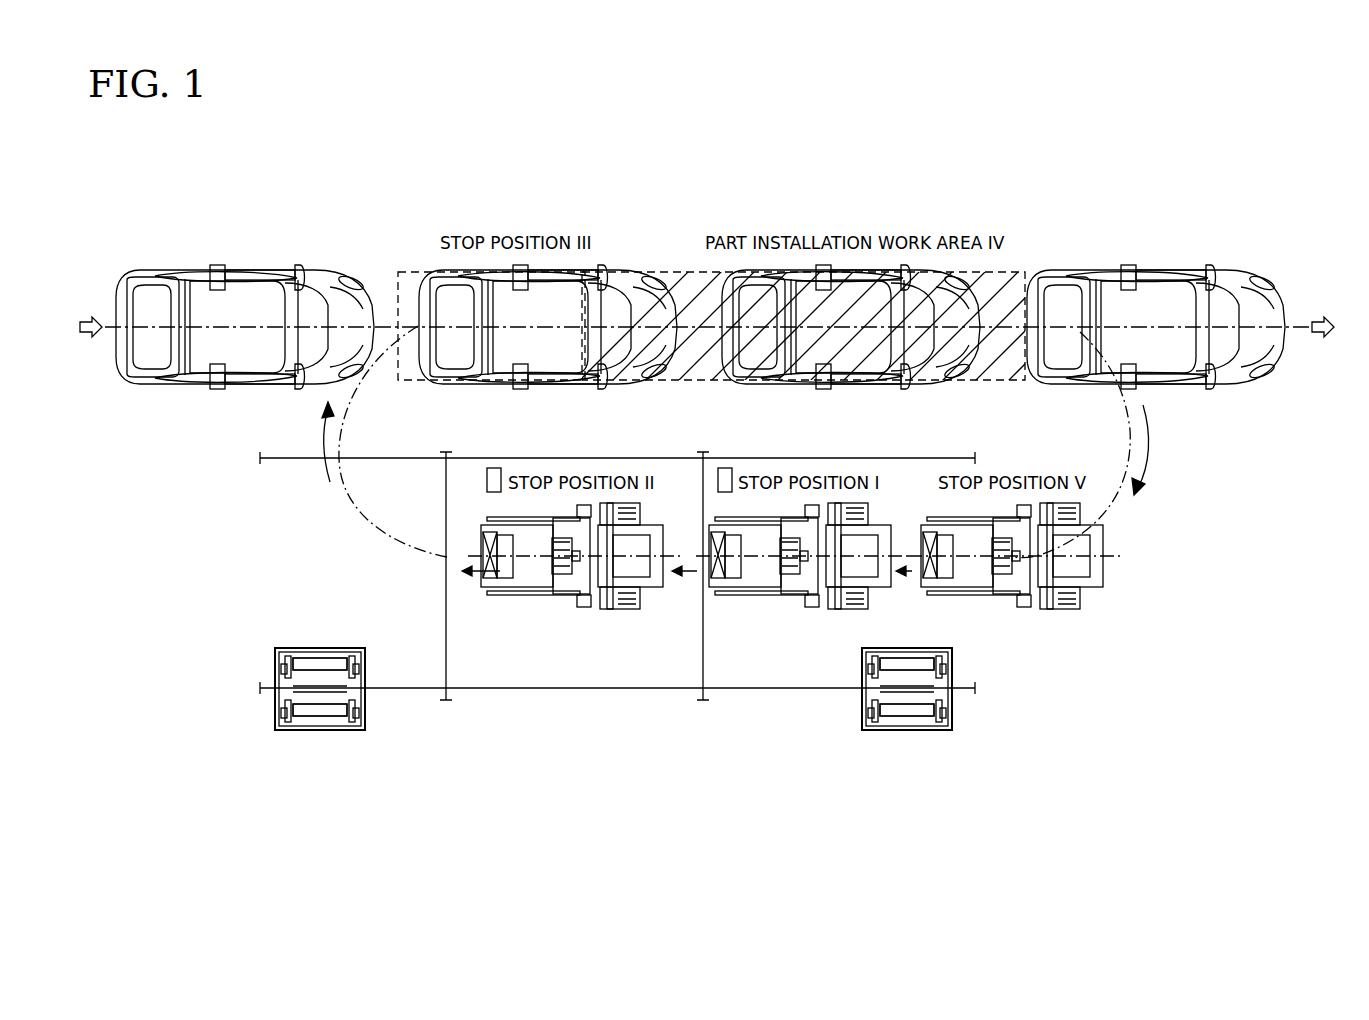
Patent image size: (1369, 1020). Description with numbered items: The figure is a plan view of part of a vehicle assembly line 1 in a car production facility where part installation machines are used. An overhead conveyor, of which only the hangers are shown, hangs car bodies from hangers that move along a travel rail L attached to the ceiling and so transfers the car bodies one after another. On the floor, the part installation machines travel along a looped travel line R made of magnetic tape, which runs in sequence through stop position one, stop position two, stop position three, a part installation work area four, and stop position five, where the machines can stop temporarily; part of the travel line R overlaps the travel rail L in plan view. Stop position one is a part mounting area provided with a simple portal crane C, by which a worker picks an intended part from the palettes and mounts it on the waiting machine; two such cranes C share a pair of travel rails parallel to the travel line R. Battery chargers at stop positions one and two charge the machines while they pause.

The vehicle assembly line 1 is at (1223, 510).
The travel rail L is at (1290, 323).
The simple portal crane C is at (452, 644).
The travel line R is at (1120, 505).